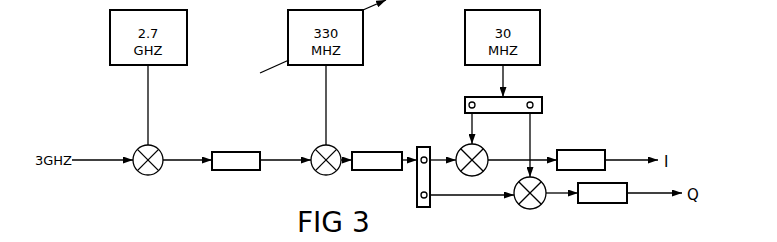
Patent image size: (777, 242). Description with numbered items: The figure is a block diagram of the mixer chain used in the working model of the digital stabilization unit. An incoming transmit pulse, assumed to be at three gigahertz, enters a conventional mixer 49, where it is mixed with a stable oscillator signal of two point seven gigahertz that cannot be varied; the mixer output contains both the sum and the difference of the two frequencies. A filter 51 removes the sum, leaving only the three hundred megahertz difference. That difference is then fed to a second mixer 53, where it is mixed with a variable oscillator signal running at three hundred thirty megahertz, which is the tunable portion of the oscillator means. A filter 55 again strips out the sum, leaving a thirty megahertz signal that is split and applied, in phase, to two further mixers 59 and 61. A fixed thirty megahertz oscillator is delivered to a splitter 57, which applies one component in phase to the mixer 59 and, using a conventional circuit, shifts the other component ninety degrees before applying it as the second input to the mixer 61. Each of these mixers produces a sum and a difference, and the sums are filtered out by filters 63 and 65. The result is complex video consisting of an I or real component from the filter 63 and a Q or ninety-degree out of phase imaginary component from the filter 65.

The mixer 49 is at (158, 145).
The filter 51 is at (216, 172).
The mixer 53 is at (311, 170).
The filter 55 is at (385, 172).
The phase splitter 57 is at (533, 97).
The mixer 59 is at (463, 176).
The mixer 61 is at (531, 209).
The filter 63 is at (572, 150).
The filter 65 is at (598, 203).